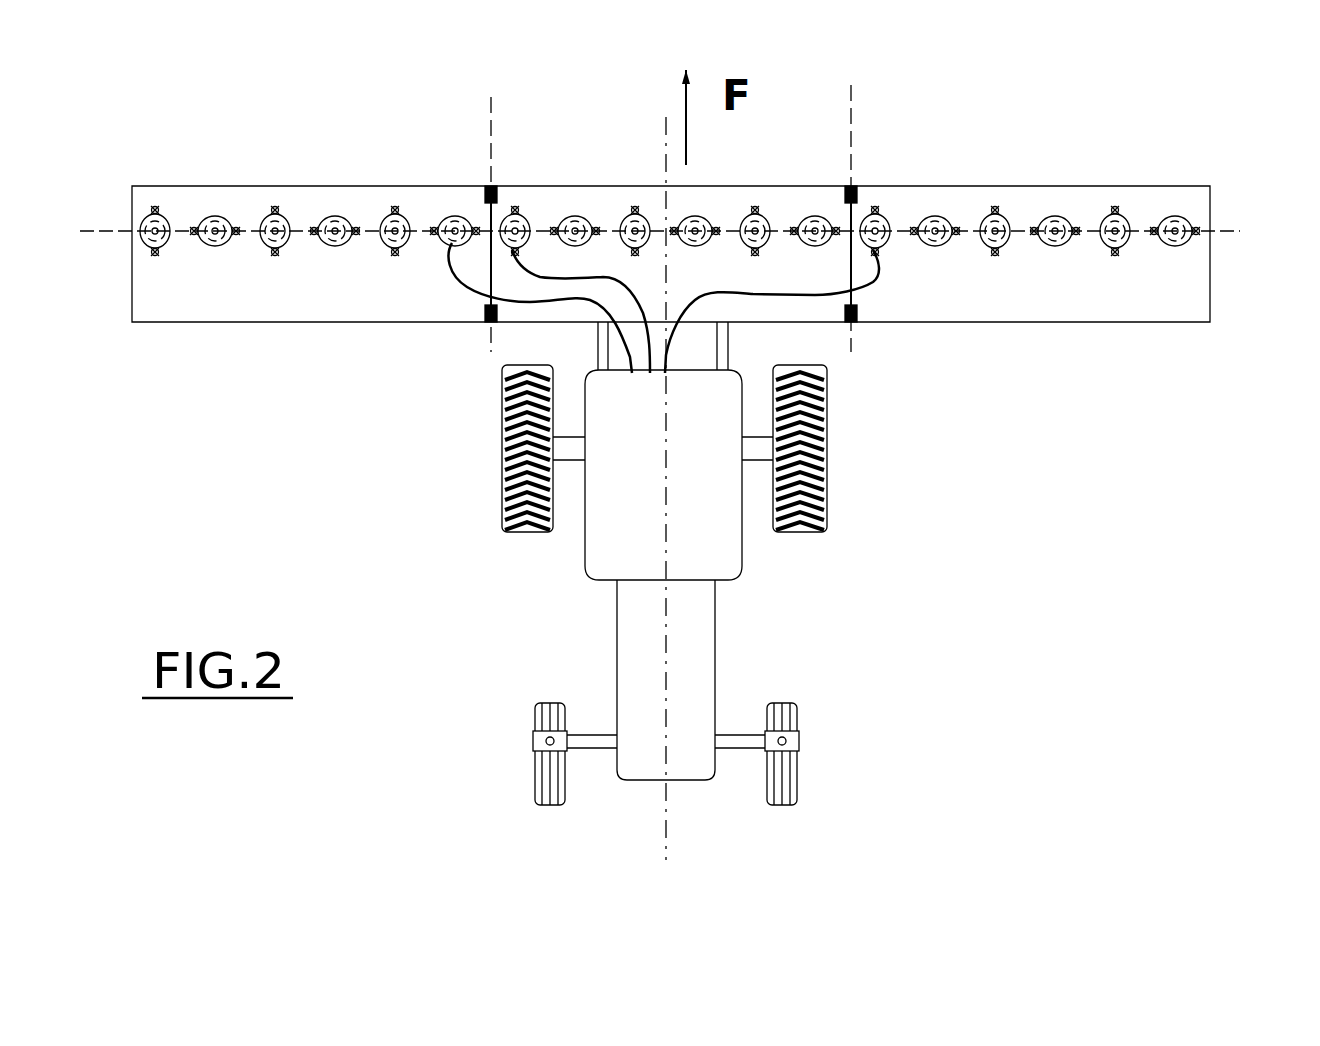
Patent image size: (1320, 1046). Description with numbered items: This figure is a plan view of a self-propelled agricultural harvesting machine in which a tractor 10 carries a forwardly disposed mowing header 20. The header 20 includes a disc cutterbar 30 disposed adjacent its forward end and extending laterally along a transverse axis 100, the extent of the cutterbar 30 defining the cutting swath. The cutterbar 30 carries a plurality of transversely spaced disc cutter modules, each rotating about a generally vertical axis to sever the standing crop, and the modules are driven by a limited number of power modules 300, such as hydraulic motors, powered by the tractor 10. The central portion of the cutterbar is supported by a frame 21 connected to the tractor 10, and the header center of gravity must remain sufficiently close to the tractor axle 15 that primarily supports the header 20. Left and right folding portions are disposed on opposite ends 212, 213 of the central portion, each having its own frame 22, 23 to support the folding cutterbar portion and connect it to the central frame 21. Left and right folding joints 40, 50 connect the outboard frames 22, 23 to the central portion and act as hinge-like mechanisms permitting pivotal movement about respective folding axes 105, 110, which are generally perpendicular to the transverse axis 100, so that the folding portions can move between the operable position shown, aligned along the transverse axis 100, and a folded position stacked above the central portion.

The tractor 10 is at (735, 563).
The tractor axle 15 is at (840, 479).
The mowing header 20 is at (676, 251).
The frame 21 is at (527, 314).
The left frame 22 is at (275, 335).
The right frame 23 is at (1010, 330).
The disc cutterbar 30 is at (1075, 212).
The left folding joint 40 is at (490, 186).
The right folding joint 50 is at (852, 186).
The transverse axis 100 is at (1230, 232).
The folding axis 105 is at (490, 108).
The folding axis 110 is at (850, 123).
The end of central portion 212 is at (475, 268).
The end of central portion 213 is at (866, 278).
The power module 300 is at (443, 222).